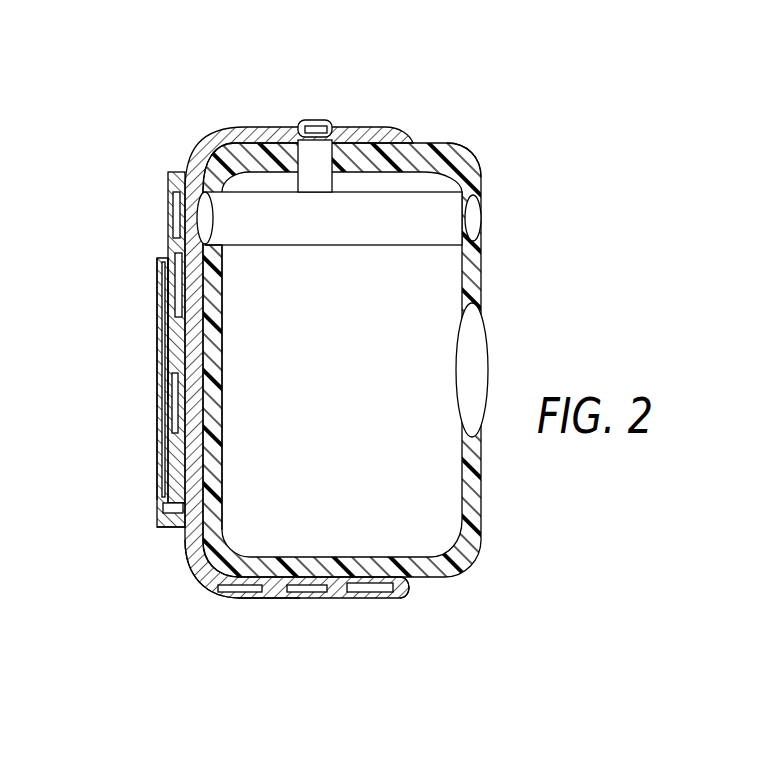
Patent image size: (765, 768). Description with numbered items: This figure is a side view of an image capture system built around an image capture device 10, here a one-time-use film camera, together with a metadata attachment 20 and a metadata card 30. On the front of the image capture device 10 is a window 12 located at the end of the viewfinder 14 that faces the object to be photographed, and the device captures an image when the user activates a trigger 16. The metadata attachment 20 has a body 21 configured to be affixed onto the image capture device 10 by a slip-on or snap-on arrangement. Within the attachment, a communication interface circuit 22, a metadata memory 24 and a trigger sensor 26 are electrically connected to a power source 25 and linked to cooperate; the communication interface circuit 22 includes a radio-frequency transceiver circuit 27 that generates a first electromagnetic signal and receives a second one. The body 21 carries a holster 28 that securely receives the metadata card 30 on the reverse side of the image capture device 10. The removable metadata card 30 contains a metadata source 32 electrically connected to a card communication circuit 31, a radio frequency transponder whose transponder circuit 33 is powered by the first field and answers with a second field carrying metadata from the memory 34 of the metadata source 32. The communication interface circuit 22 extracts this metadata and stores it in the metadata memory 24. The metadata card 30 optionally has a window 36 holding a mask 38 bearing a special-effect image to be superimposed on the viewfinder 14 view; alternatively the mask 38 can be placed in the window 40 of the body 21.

The image capture device 10 is at (480, 492).
The window 12 is at (485, 195).
The viewfinder 14 is at (472, 214).
The trigger 16 is at (332, 155).
The metadata attachment 20 is at (156, 490).
The body 21 is at (397, 590).
The communication interface circuit 22 is at (240, 614).
The metadata memory 24 is at (303, 600).
The power source 25 is at (362, 600).
The trigger sensor 26 is at (322, 122).
The radio-frequency transceiver circuit 27 is at (210, 600).
The holster 28 is at (163, 527).
The metadata card 30 is at (178, 173).
The card communication circuit 31 is at (168, 294).
The metadata source 32 is at (160, 436).
The transponder circuit 33 is at (166, 328).
The memory 34 is at (177, 407).
The window 36 is at (173, 198).
The mask 38 is at (175, 217).
The window 40 is at (218, 250).